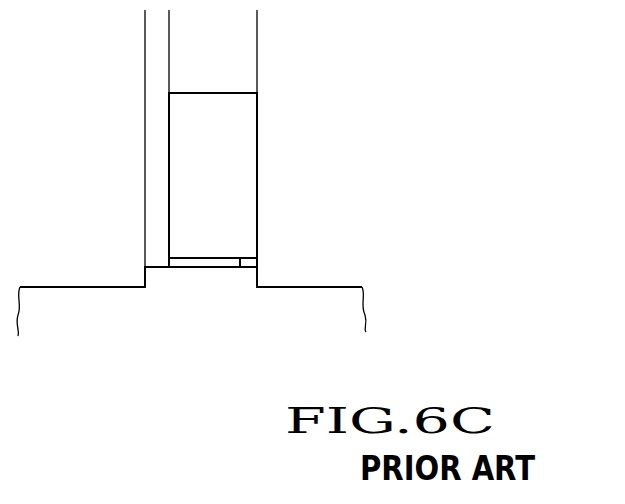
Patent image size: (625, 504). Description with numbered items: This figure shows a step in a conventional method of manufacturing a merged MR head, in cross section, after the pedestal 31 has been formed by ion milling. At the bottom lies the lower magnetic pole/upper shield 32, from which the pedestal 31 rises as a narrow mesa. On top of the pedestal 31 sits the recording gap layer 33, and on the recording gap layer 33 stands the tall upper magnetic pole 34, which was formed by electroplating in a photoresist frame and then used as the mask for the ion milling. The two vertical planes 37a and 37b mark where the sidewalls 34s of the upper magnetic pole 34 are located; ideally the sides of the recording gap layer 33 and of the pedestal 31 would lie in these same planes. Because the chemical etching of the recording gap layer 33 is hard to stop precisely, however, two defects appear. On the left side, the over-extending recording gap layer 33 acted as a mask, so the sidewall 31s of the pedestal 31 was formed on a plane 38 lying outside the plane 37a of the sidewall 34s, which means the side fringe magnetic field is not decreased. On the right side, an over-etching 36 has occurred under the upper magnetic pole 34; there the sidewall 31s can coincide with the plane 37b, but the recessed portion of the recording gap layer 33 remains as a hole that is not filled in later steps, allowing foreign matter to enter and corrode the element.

The pedestal 31 is at (232, 277).
The sidewall of pedestal 31s is at (143, 277).
The lower magnetic pole/upper shield 32 is at (105, 313).
The recording gap layer 33 is at (193, 260).
The upper magnetic pole 34 is at (250, 200).
The sidewall of upper magnetic pole 34s is at (259, 133).
The over-etching 36 is at (257, 262).
The plane 37a is at (169, 45).
The plane 37b is at (259, 52).
The plane 38 is at (116, 138).